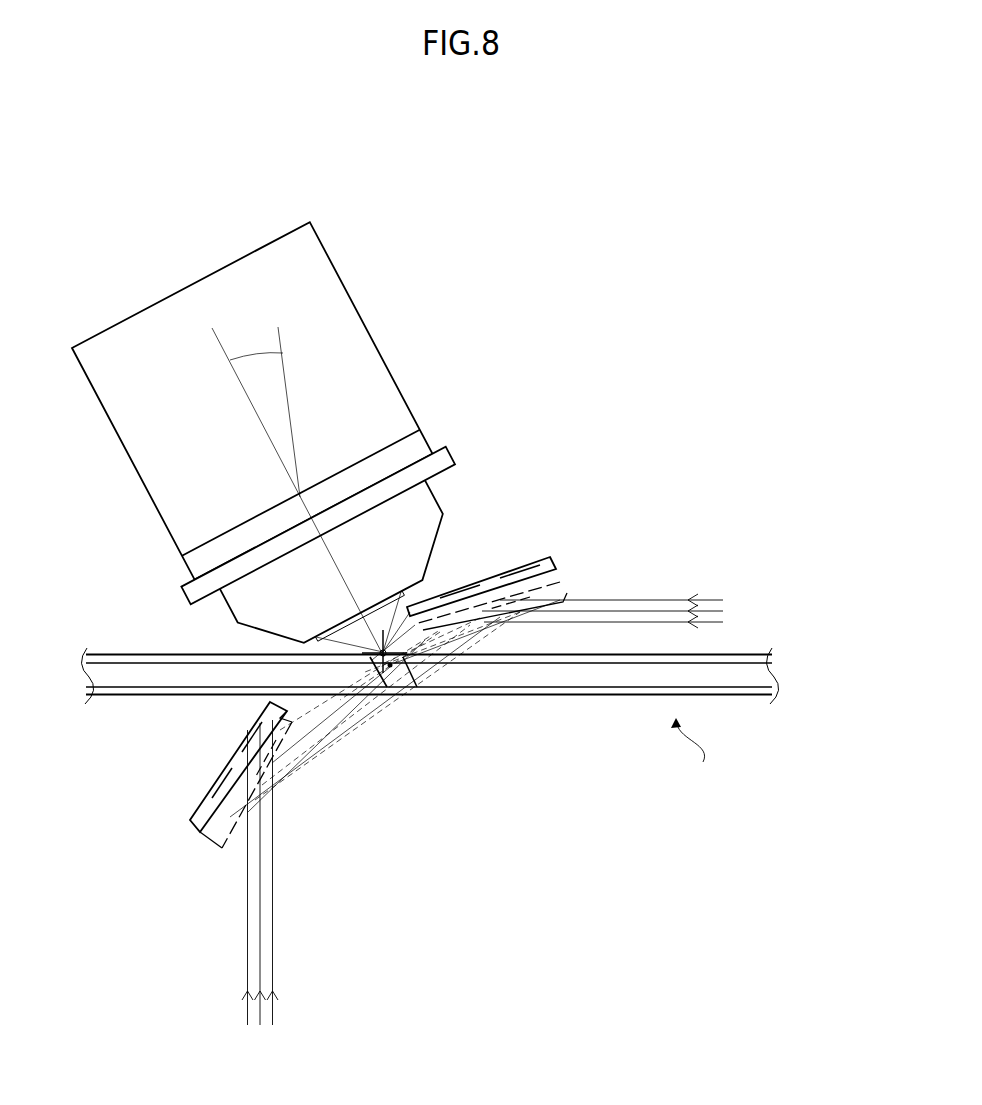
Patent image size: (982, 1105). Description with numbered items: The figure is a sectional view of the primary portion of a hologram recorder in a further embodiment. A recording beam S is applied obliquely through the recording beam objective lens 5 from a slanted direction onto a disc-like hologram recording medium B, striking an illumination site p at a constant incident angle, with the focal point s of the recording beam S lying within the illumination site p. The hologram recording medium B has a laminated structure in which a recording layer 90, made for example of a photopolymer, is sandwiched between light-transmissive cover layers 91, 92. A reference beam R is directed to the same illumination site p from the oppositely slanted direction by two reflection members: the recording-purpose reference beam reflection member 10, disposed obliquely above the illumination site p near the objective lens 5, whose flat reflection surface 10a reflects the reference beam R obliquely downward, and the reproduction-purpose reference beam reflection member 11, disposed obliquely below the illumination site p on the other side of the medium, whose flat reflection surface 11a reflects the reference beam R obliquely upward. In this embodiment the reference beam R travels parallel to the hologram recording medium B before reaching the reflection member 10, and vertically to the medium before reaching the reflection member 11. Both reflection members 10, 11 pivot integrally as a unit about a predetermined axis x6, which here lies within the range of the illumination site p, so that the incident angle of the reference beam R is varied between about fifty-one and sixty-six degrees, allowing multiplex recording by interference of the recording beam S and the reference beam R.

The recording beam objective lens 5 is at (143, 488).
The recording-purpose reference beam reflection member 10 is at (529, 547).
The reflection surface 10a is at (560, 588).
The reproduction-purpose reference beam reflection member 11 is at (216, 838).
The reflection surface 11a is at (243, 855).
The recording layer 90 is at (469, 687).
The cover layer 91 is at (763, 662).
The cover layer 92 is at (769, 690).
The predetermined axis x6 is at (383, 651).
The recording beam S is at (225, 345).
The reference beam R is at (712, 600).
The hologram recording medium B is at (691, 757).
The illumination site p is at (405, 667).
The focal point s is at (398, 668).